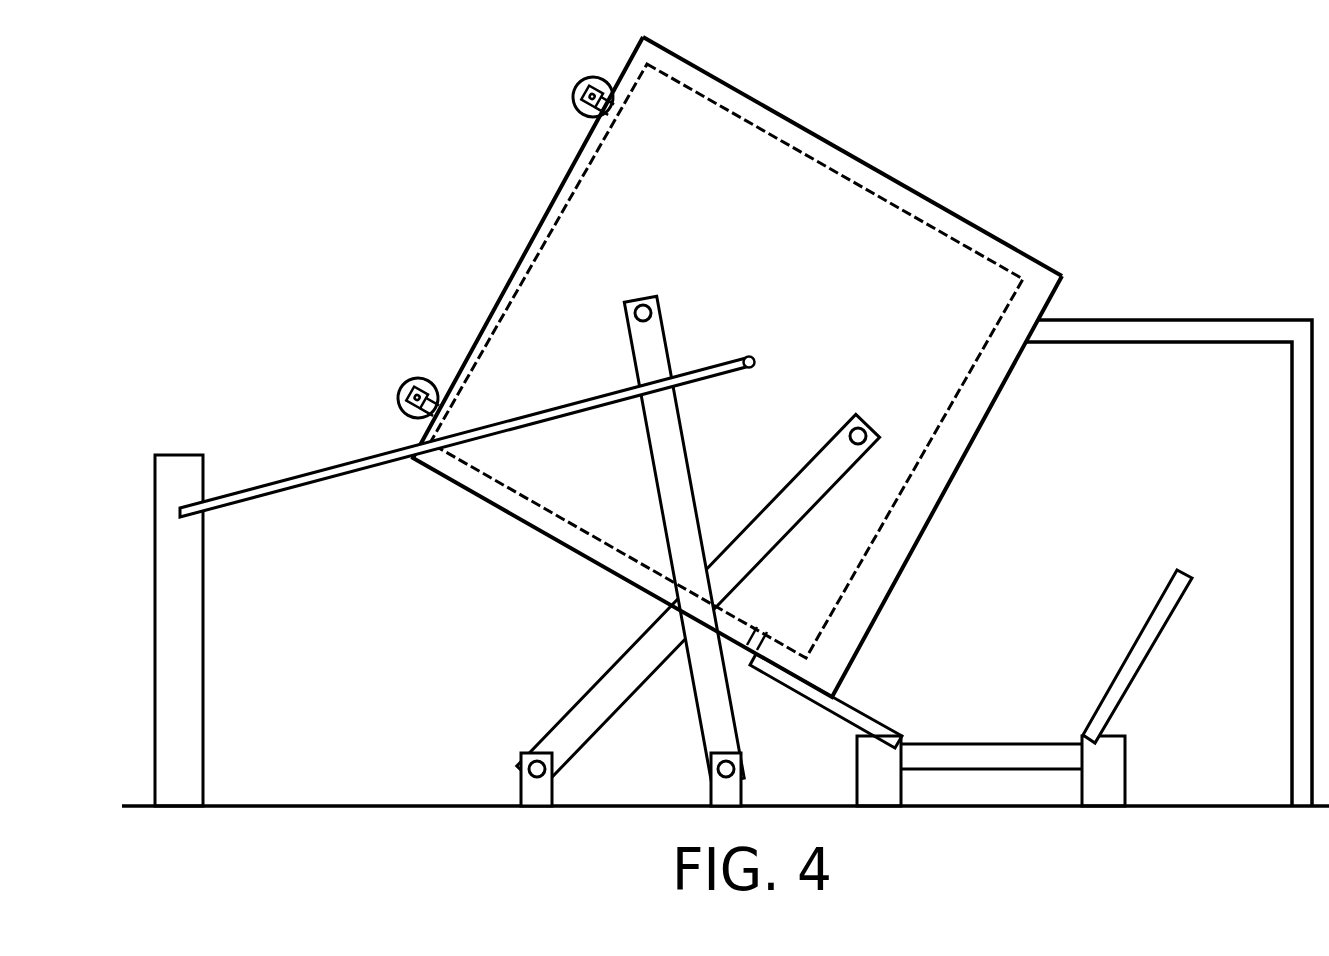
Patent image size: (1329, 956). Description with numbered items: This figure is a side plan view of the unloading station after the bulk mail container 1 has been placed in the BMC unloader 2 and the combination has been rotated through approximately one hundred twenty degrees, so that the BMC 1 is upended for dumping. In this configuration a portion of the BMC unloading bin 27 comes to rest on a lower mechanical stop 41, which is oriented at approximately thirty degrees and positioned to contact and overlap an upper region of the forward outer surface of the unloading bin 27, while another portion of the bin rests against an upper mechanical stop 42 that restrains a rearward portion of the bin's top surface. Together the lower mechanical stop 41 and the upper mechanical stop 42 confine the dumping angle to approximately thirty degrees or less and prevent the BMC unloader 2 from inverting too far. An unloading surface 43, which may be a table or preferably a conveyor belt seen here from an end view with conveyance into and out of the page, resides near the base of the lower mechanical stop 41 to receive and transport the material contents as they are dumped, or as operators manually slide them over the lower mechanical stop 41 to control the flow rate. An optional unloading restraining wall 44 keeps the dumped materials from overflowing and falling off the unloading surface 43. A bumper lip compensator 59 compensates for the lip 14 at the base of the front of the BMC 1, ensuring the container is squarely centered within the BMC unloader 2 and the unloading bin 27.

The bulk mail container 1 is at (755, 253).
The BMC unloader 2 is at (913, 198).
The BMC unloading bin 27 is at (998, 250).
The upper mechanical stop 42 is at (1032, 333).
The lip 14 is at (426, 462).
The lower mechanical stop 41 is at (847, 698).
The unloading surface 43 is at (972, 760).
The unloading restraining wall 44 is at (1140, 648).
The bumper lip compensator 59 is at (751, 648).